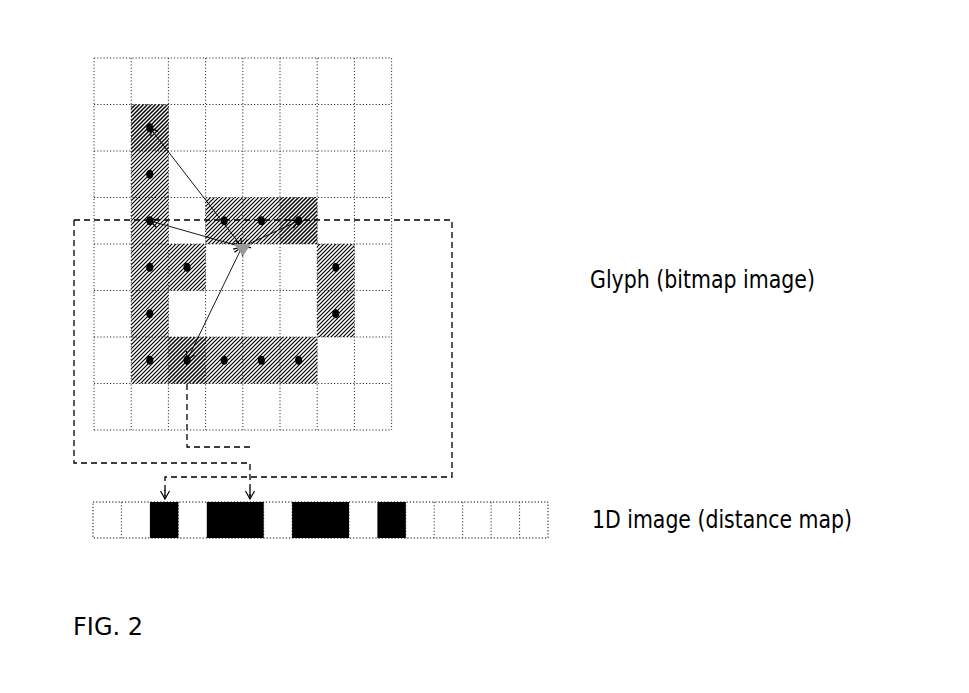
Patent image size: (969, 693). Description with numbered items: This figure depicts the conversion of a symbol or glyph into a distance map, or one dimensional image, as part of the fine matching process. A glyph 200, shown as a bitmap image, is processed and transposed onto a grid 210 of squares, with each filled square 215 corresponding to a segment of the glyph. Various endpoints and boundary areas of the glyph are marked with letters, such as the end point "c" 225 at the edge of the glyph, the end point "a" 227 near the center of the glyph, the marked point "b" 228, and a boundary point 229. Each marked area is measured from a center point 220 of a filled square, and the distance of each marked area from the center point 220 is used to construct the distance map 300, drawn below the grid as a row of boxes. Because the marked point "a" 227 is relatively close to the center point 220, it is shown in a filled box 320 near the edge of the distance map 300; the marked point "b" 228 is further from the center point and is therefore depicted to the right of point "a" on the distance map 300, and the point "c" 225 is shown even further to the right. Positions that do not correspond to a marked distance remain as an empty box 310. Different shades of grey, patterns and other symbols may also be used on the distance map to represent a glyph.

The grid 210 is at (342, 82).
The glyph 200 is at (408, 178).
The end point "c" 225 is at (157, 118).
The end point "a" 227 is at (299, 205).
The boundary point 229 is at (344, 270).
The filled square 215 is at (350, 333).
The center point 220 is at (249, 254).
The marked point "b" 228 is at (172, 378).
The distance map 300 is at (516, 493).
The filled box 320 is at (158, 539).
The empty box 310 is at (364, 540).